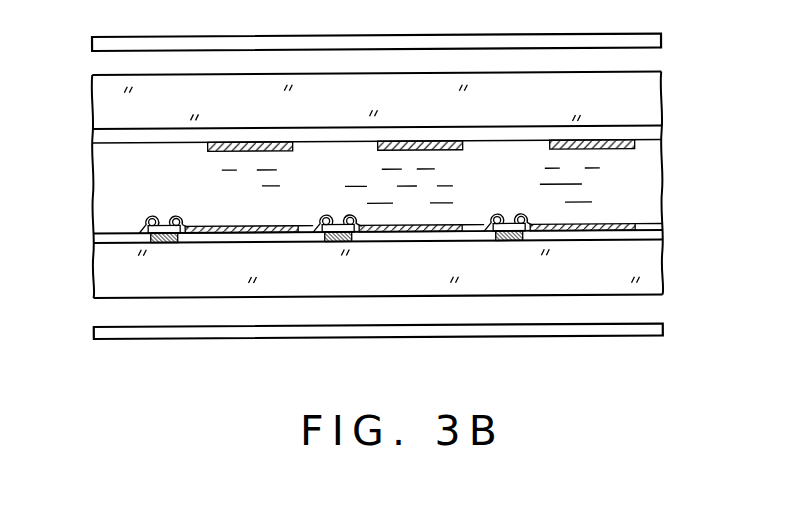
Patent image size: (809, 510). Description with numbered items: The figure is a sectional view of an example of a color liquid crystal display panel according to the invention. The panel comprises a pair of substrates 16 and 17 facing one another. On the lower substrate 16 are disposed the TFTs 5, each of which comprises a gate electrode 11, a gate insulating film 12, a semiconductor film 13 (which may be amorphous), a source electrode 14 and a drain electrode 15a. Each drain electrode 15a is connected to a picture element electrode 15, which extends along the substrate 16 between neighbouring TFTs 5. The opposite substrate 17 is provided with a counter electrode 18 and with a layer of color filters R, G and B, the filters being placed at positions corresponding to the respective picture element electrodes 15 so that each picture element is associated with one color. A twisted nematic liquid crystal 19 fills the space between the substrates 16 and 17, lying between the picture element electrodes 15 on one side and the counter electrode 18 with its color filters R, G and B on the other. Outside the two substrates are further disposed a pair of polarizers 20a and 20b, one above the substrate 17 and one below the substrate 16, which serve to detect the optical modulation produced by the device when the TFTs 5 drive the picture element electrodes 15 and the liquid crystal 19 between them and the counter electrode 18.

The TFT 5 is at (133, 221).
The gate electrode 11 is at (166, 245).
The gate insulating film 12 is at (183, 218).
The semiconductor film 13 is at (161, 224).
The source electrode 14 is at (148, 218).
The picture element electrode 15 is at (263, 225).
The drain electrode 15a is at (184, 217).
The substrate 16 is at (663, 262).
The substrate 17 is at (663, 96).
The counter electrode 18 is at (663, 131).
The twisted nematic liquid crystal 19 is at (663, 204).
The polarizer 20a is at (663, 38).
The polarizer 20b is at (663, 327).
The color filter R is at (293, 152).
The color filter G is at (463, 152).
The color filter B is at (603, 152).